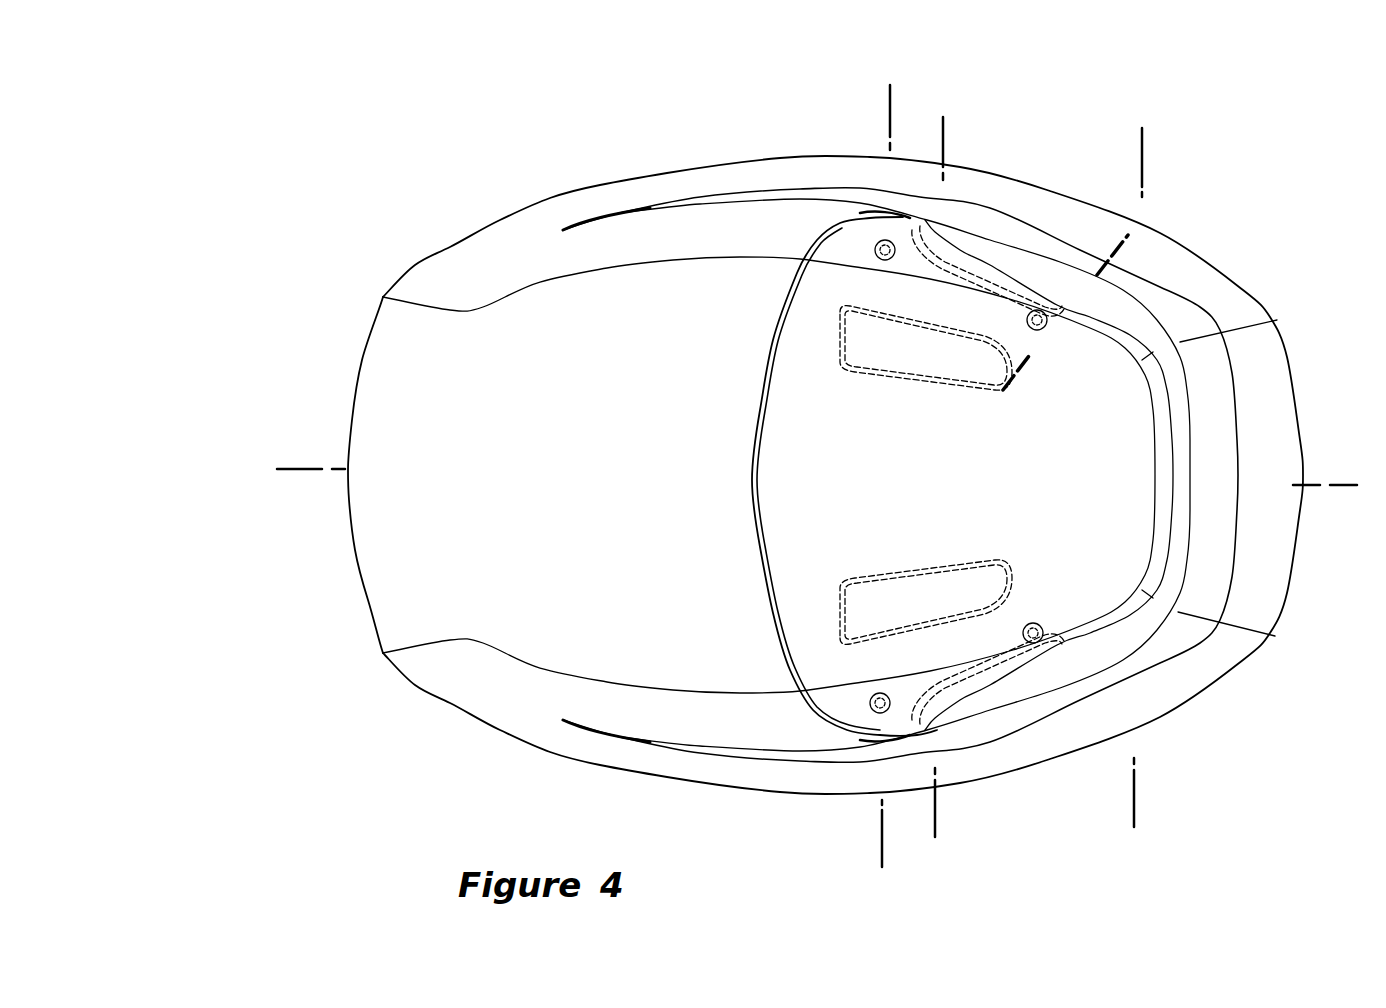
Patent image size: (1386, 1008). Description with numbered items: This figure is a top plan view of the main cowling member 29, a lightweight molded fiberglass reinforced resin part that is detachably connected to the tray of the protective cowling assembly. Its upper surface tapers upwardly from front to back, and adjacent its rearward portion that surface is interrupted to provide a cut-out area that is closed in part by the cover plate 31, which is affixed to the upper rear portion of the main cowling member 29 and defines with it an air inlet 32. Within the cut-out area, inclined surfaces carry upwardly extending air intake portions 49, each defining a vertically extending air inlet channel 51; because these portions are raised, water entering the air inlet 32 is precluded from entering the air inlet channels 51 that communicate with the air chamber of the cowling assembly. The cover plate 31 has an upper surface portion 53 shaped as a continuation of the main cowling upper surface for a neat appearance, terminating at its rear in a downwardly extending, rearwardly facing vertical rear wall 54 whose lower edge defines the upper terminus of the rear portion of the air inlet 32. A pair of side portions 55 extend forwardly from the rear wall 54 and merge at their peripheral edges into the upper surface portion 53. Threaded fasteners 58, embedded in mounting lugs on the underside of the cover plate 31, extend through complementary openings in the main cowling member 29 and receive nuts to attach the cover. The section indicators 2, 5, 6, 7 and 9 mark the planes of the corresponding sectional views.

The main cowling member 29 is at (497, 697).
The cover plate 31 is at (770, 510).
The air inlet 32 is at (1186, 426).
The air intake portion 49 is at (927, 388).
The air inlet channel 51 is at (897, 360).
The upper surface portion 53 is at (1112, 597).
The rear wall 54 is at (1163, 547).
The side portions 55 is at (845, 238).
The threaded fasteners 58 is at (880, 242).
The section line 2- 2 is at (287, 492).
The section line 5- 5 is at (957, 127).
The section line 6- 6 is at (1158, 138).
The section line 7- 7 is at (1135, 250).
The section line 9- 9 is at (940, 93).